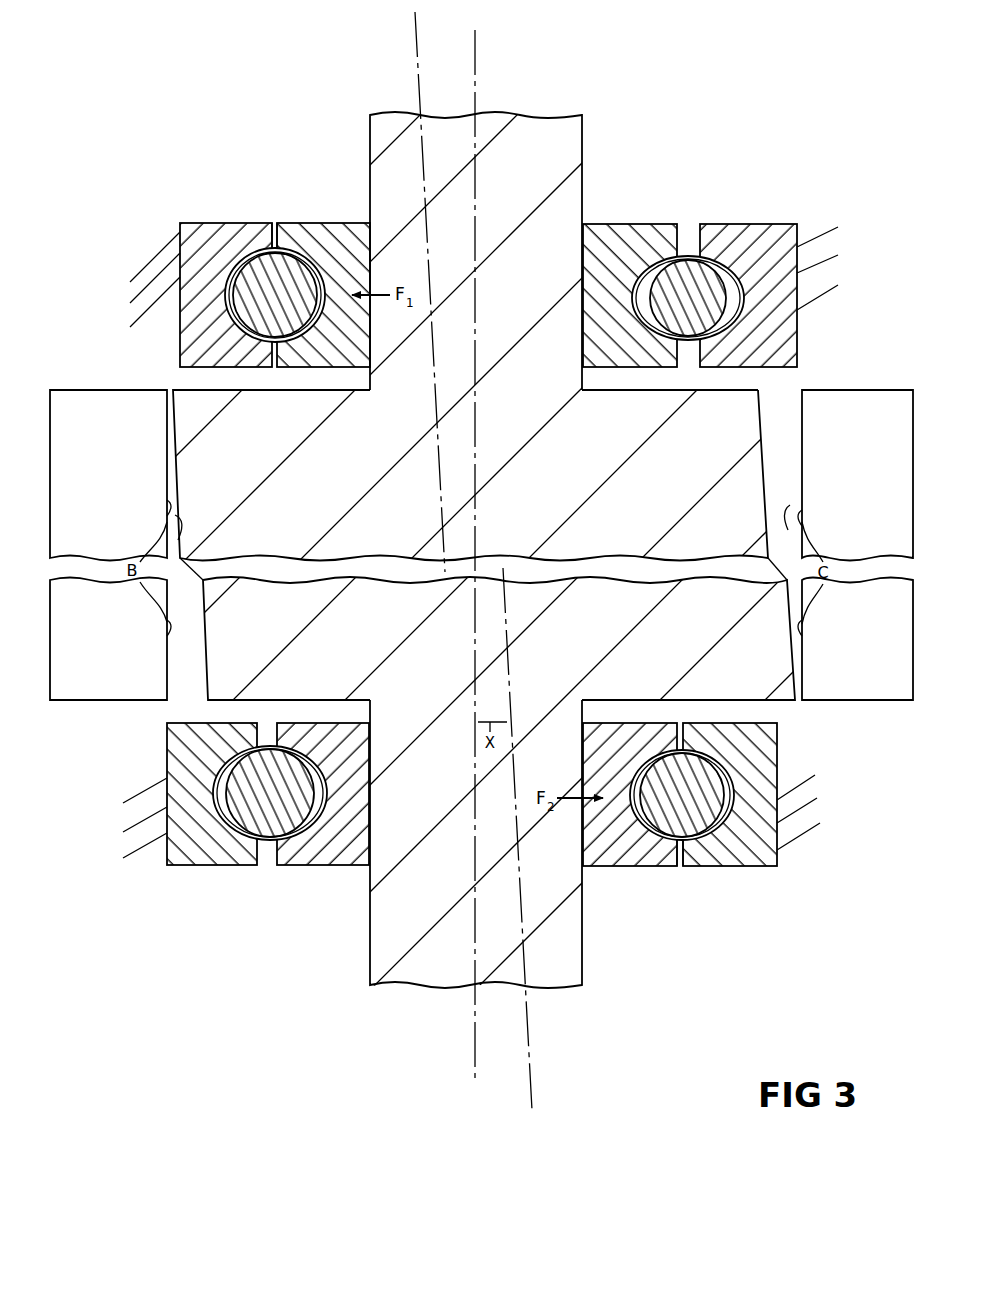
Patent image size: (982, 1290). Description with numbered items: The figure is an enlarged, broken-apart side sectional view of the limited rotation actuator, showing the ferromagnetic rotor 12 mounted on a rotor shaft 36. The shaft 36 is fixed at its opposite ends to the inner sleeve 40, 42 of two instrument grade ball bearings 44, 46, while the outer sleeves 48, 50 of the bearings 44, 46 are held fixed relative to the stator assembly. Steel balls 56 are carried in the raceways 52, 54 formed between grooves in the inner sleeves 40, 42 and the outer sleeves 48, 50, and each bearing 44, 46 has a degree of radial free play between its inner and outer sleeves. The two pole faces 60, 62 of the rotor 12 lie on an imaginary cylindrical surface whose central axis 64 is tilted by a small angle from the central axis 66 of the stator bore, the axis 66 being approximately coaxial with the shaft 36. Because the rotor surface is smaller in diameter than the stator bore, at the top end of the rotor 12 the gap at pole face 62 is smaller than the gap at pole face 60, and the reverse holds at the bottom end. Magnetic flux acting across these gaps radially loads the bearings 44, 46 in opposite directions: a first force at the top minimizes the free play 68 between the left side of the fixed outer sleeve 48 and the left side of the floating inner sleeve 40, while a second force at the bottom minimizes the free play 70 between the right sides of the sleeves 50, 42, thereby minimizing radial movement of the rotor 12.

The rotor 12 is at (572, 449).
The rotor shaft 36 is at (582, 146).
The inner sleeve 40 is at (302, 223).
The inner sleeve 42 is at (345, 868).
The ball bearing 44 is at (784, 194).
The ball bearing 46 is at (770, 905).
The outer sleeve 48 is at (213, 222).
The outer sleeve 50 is at (210, 868).
The raceway 52 is at (316, 263).
The raceway 54 is at (300, 868).
The steel balls 56 is at (284, 801).
The rotor pole face 60 is at (788, 594).
The rotor pole face 62 is at (205, 596).
The central axis 64 is at (417, 62).
The central axis 66 is at (478, 97).
The free play 68 is at (274, 213).
The free play 70 is at (682, 877).